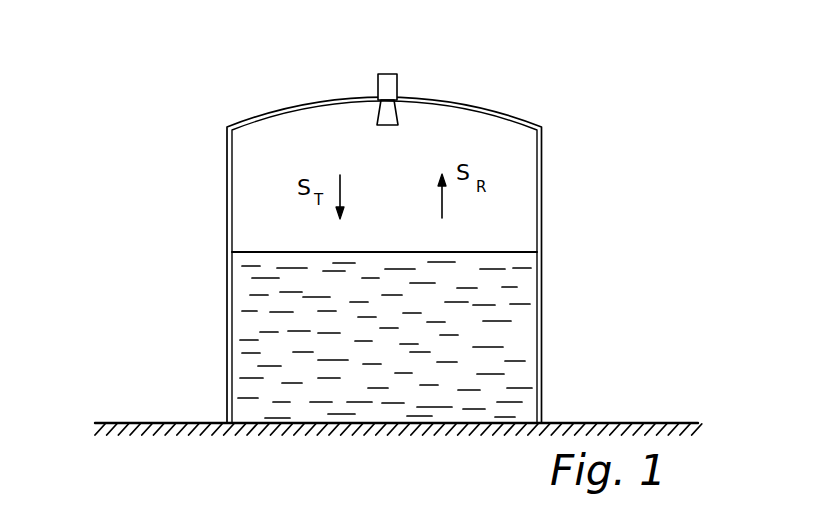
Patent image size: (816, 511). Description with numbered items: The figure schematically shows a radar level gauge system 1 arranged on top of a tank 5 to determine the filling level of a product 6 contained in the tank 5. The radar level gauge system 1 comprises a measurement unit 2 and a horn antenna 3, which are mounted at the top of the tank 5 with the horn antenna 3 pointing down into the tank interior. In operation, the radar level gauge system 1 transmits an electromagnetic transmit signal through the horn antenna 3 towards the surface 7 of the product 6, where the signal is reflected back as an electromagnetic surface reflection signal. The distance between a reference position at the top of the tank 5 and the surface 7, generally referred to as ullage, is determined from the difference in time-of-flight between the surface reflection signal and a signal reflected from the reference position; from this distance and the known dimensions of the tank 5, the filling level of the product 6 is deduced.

The radar level gauge system 1 is at (403, 72).
The measurement unit 2 is at (378, 86).
The horn antenna 3 is at (381, 110).
The tank 5 is at (542, 157).
The product 6 is at (523, 337).
The surface 7 is at (513, 252).